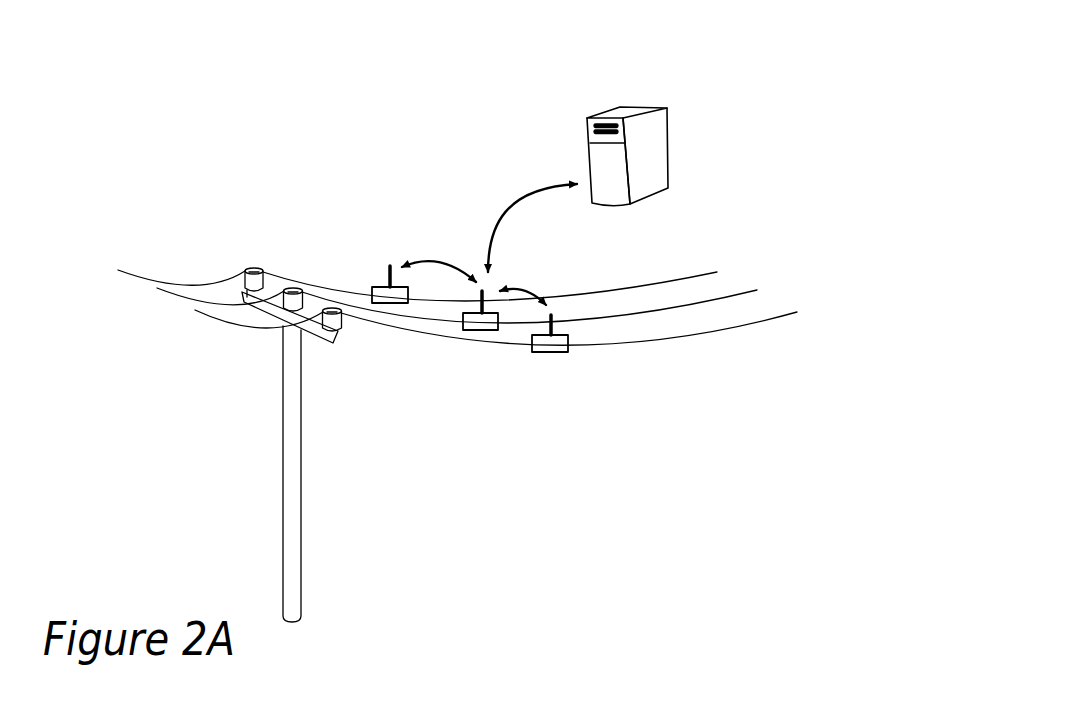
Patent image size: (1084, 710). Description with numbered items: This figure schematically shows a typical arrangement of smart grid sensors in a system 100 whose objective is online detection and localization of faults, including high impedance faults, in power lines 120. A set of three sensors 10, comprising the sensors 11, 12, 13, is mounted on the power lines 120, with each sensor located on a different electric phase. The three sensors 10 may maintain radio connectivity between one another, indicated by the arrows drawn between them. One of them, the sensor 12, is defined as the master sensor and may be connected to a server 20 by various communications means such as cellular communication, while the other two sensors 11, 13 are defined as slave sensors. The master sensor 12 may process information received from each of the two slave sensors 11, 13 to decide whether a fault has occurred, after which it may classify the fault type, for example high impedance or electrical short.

The system 100 is at (188, 229).
The power lines 120 is at (745, 325).
The set of three sensors 10 is at (588, 361).
The sensor 11 is at (392, 266).
The master sensor 12 is at (482, 292).
The sensor 13 is at (552, 316).
The server 20 is at (633, 107).